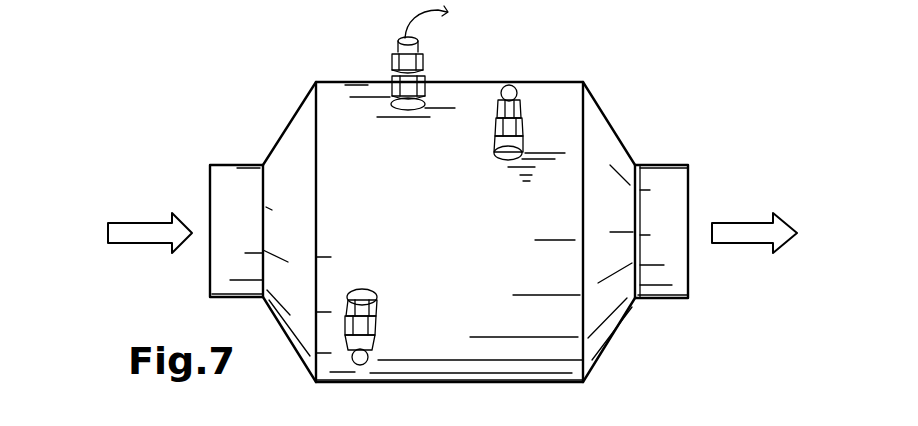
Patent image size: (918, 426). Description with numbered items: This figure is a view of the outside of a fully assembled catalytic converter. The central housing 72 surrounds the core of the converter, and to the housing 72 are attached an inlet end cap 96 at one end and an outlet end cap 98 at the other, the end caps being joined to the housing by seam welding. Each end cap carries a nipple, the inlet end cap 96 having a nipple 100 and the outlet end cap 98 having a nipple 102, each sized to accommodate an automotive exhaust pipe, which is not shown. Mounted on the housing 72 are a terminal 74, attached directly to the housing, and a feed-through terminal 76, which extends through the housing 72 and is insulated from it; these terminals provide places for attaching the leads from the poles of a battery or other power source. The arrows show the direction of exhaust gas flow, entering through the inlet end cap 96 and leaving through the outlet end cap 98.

The housing 72 is at (548, 100).
The terminal 74 is at (488, 123).
The feed-through terminal 76 is at (385, 308).
The inlet end cap 96 is at (277, 327).
The outlet end cap 98 is at (652, 300).
The nipple 100 is at (210, 255).
The nipple 102 is at (690, 202).